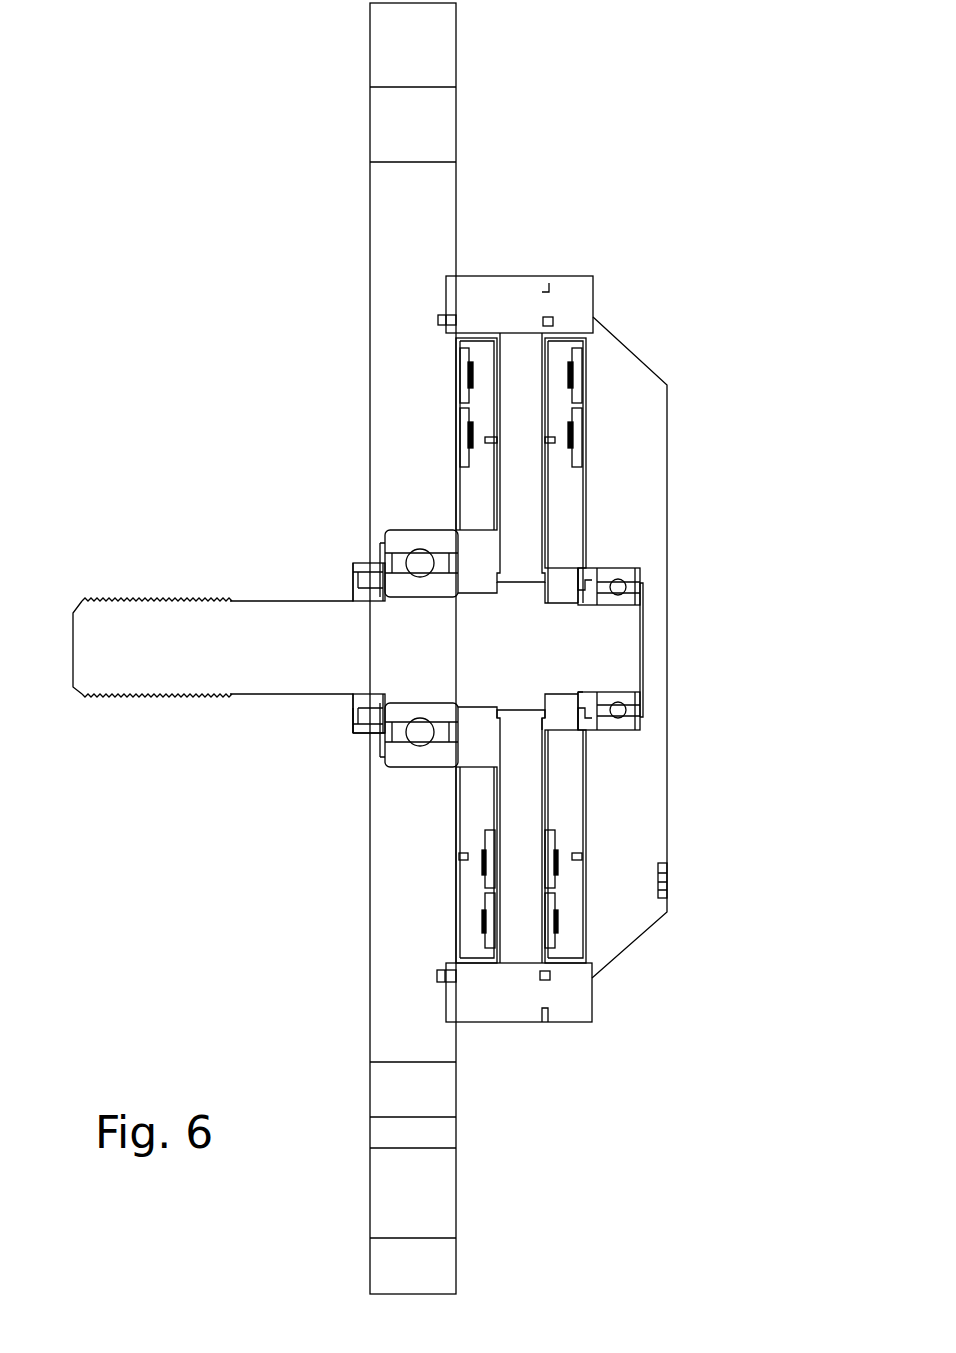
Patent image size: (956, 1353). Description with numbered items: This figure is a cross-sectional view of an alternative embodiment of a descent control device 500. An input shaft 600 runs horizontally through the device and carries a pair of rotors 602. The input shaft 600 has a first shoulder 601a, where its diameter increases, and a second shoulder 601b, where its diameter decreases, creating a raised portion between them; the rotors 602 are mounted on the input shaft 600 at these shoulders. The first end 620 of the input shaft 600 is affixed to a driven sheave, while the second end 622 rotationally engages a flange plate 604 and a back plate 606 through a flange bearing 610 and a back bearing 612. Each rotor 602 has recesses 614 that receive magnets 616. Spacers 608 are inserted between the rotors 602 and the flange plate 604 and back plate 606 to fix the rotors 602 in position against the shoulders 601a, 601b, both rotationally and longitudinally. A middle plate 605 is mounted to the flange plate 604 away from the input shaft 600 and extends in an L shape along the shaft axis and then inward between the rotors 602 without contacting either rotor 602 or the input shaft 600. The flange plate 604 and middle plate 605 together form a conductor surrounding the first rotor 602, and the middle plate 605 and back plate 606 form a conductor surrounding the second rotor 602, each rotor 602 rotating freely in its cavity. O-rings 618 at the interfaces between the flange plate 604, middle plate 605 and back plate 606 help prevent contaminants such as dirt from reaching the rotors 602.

The descent control device 500 is at (200, 212).
The input shaft 600 is at (185, 600).
The first shoulder 601a is at (357, 730).
The second shoulder 601b is at (540, 712).
The rotor 602 is at (475, 790).
The flange plate 604 is at (382, 888).
The middle plate 605 is at (487, 1000).
The back plate 606 is at (642, 842).
The spacer 608 is at (353, 570).
The flange bearing 610 is at (400, 540).
The back bearing 612 is at (632, 575).
The recess 614 is at (458, 447).
The magnet 616 is at (458, 358).
The O-ring 618 is at (438, 320).
The first end 620 is at (73, 620).
The second end 622 is at (625, 652).